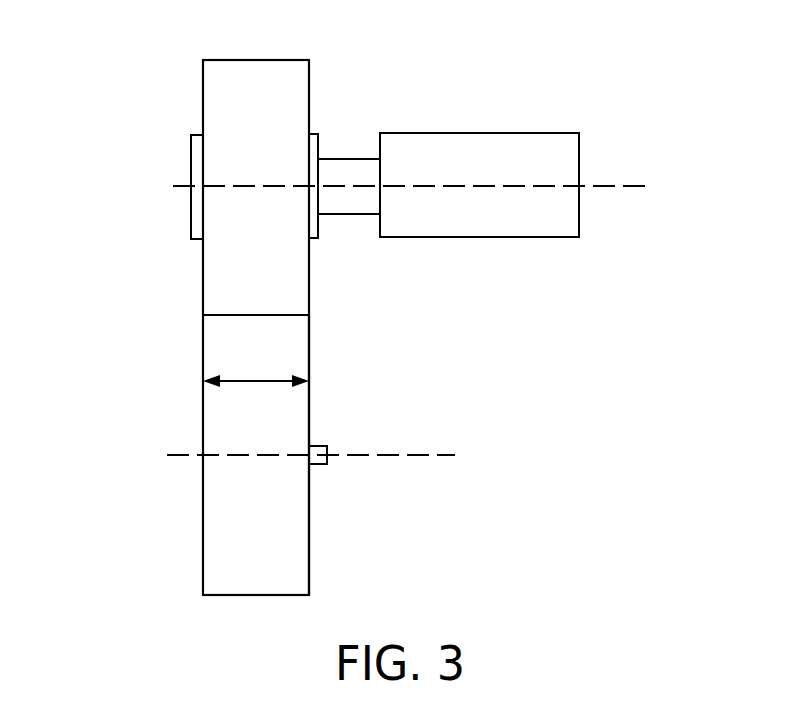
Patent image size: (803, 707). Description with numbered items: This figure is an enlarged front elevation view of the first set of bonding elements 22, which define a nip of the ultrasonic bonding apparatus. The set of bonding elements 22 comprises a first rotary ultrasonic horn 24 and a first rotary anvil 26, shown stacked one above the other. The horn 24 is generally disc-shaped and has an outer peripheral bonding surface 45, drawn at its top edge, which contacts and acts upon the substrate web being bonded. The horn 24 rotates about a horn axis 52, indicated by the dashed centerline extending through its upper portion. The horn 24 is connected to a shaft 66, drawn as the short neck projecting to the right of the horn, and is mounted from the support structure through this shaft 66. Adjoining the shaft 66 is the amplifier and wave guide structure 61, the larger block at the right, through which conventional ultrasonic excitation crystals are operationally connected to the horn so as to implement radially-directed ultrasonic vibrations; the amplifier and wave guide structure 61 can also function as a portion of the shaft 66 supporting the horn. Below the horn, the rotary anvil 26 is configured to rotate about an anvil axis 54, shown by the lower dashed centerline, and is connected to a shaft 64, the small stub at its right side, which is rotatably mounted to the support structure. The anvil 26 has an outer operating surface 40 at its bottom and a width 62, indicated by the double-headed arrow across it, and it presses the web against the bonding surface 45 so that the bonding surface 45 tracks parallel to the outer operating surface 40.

The first set of bonding elements 22 is at (148, 338).
The first rotary ultrasonic horn 24 is at (324, 107).
The outer peripheral bonding surface 45 is at (258, 60).
The shaft 66 is at (345, 215).
The amplifier and wave guide structure 61 is at (510, 132).
The horn axis 52 is at (635, 185).
The width 62 is at (268, 378).
The shaft 64 is at (310, 444).
The anvil axis 54 is at (440, 454).
The first rotary anvil 26 is at (326, 539).
The outer operating surface 40 is at (288, 596).